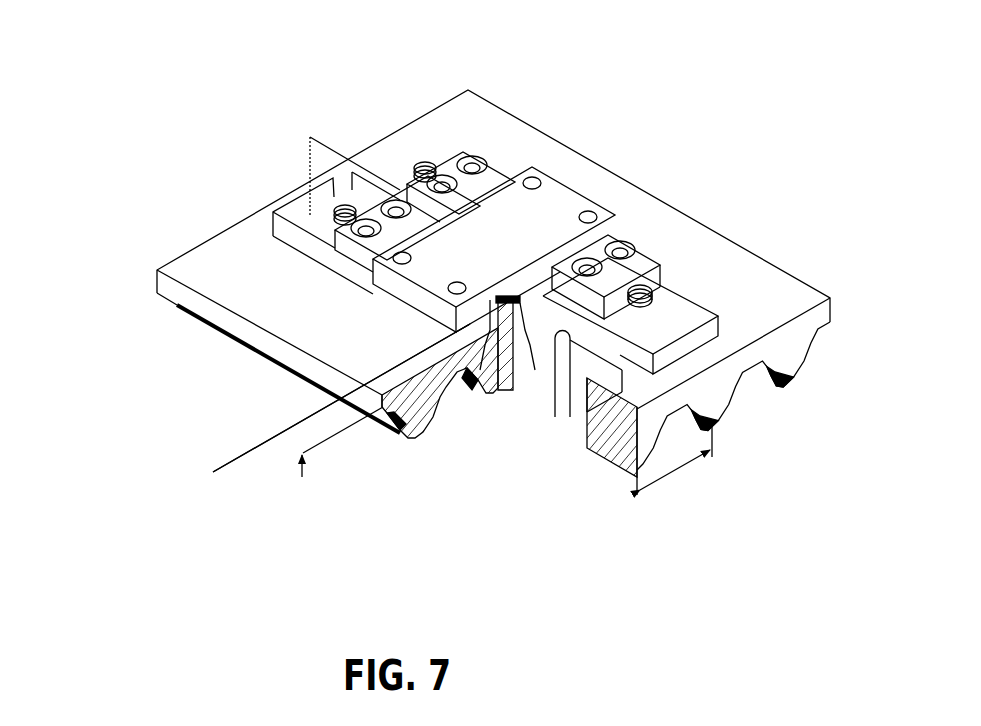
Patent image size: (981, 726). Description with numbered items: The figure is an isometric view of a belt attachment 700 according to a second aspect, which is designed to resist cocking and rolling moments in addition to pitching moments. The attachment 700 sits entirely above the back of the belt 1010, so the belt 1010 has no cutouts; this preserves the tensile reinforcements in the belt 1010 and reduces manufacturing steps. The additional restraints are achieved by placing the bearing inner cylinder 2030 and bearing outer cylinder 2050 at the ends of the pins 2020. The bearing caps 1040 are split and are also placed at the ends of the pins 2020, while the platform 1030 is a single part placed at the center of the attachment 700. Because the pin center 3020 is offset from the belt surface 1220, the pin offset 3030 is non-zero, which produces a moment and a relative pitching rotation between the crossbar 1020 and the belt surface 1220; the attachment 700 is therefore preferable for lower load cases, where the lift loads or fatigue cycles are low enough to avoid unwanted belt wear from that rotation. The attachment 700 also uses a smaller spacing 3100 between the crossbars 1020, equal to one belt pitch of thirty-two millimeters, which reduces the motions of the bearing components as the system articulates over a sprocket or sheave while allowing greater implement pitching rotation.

The belt attachment 700 is at (493, 140).
The belt 1010 is at (197, 302).
The crossbar 1020 is at (308, 203).
The platform 1030 is at (563, 198).
The bearing cap 1040 is at (275, 243).
The belt surface 1220 is at (455, 113).
The pin 2020 is at (556, 418).
The bearing inner cylinder 2030 is at (509, 392).
The bearing outer cylinder 2050 is at (495, 357).
The pin center 3020 is at (296, 414).
The pin offset 3030 is at (283, 433).
The spacing 3100 is at (699, 469).